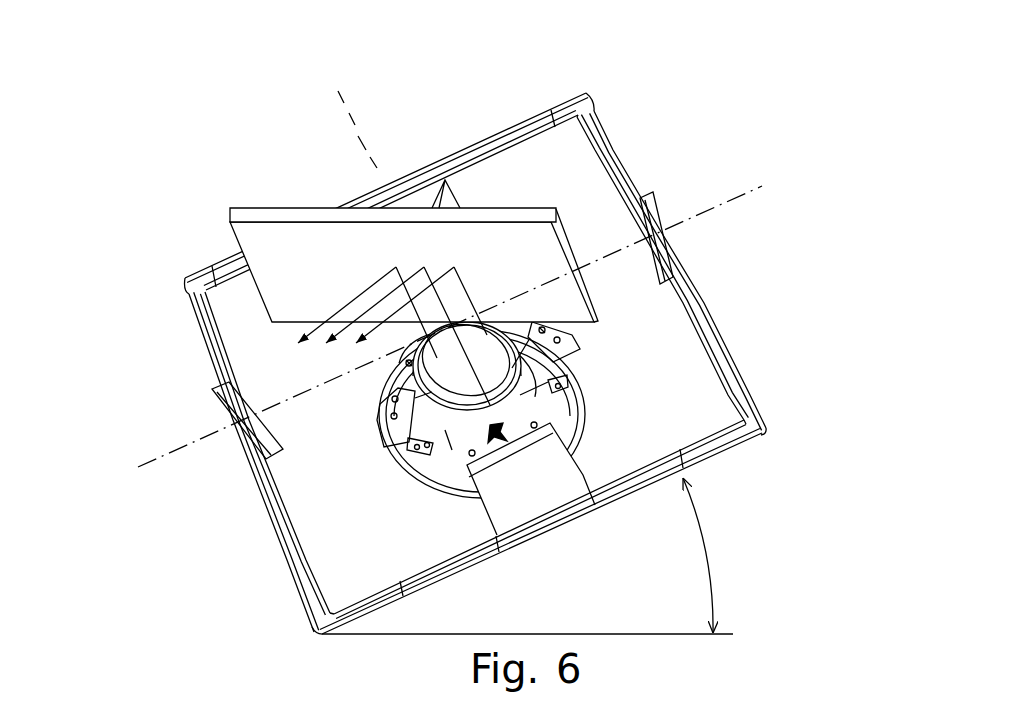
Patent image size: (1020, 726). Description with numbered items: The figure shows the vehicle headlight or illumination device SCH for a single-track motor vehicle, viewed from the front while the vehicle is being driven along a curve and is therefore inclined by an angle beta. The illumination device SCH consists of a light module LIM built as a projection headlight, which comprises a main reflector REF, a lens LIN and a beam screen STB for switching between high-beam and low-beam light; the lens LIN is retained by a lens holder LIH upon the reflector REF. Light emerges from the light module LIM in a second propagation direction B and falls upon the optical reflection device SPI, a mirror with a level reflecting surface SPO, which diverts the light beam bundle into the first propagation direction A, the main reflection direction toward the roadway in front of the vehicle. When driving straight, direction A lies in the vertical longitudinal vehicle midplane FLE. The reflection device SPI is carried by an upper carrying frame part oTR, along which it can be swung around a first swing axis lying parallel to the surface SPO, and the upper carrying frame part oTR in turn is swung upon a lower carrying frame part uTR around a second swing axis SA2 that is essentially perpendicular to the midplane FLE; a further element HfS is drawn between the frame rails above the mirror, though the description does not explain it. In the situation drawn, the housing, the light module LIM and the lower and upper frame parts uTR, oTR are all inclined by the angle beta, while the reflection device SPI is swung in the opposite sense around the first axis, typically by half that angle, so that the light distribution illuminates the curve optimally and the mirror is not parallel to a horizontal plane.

The upper carrying frame part oTR is at (607, 130).
The lower carrying frame part uTR is at (707, 301).
The illumination device SCH is at (526, 324).
The reflecting surface SPO is at (262, 244).
The optical reflection device SPI is at (552, 210).
The holder for mirror HfS is at (432, 195).
The longitudinal vehicle midplane FLE is at (350, 118).
The second swing axis SA2 is at (145, 467).
The first propagation direction A is at (348, 300).
The second propagation direction B is at (468, 292).
The light module LIM is at (616, 442).
The reflector REF is at (584, 418).
The lens LIN is at (452, 373).
The lens holder LIH is at (415, 448).
The beam screen STB is at (568, 342).